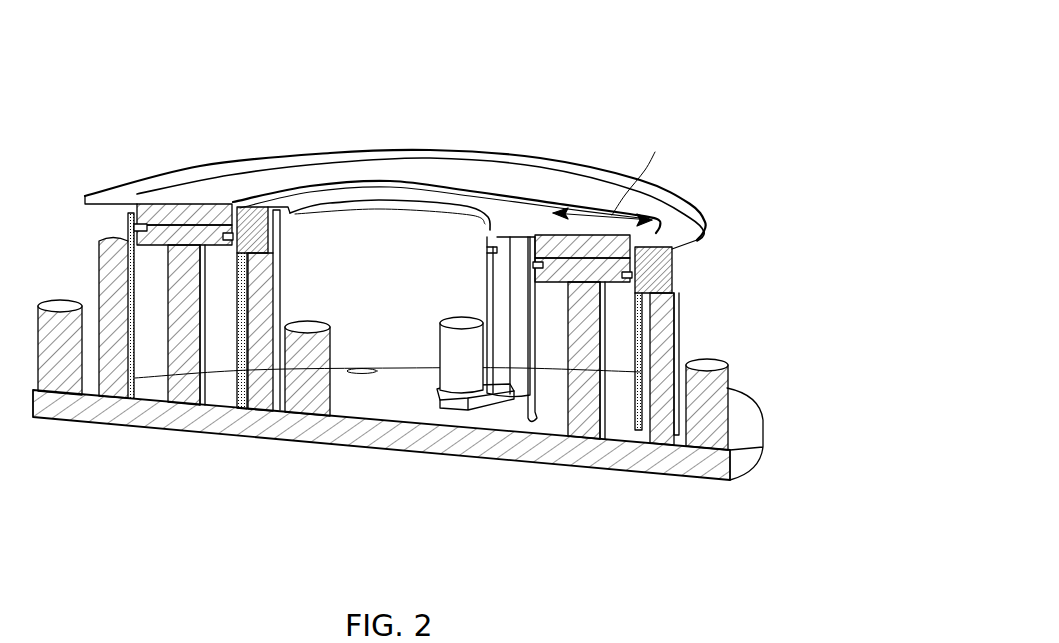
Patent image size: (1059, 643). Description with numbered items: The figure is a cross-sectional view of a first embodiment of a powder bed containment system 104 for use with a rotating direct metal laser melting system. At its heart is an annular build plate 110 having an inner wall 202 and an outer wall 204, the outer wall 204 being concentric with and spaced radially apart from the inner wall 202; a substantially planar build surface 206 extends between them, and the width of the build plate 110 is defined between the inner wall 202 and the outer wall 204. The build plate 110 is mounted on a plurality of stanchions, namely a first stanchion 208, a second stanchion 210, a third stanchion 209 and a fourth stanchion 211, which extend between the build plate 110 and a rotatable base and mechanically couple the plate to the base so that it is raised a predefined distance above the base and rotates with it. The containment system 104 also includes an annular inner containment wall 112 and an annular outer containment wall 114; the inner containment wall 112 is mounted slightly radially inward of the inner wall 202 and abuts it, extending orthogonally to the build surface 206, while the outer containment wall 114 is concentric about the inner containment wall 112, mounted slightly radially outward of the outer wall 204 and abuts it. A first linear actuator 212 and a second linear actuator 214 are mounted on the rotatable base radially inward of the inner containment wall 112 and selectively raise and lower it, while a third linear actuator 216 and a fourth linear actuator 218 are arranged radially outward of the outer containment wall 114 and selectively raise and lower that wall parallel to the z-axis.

The powder bed containment system 104 is at (676, 71).
The annular build plate 110 is at (537, 184).
The annular inner containment wall 112 is at (268, 160).
The annular outer containment wall 114 is at (452, 184).
The inner wall 202 is at (280, 201).
The outer wall 204 is at (392, 150).
The build surface 206 is at (462, 162).
The first stanchion 208 is at (182, 410).
The third stanchion 209 is at (362, 420).
The second stanchion 210 is at (595, 455).
The fourth stanchion 211 is at (548, 445).
The first linear actuator 212 is at (296, 412).
The second linear actuator 214 is at (443, 405).
The third linear actuator 216 is at (62, 395).
The fourth linear actuator 218 is at (672, 305).